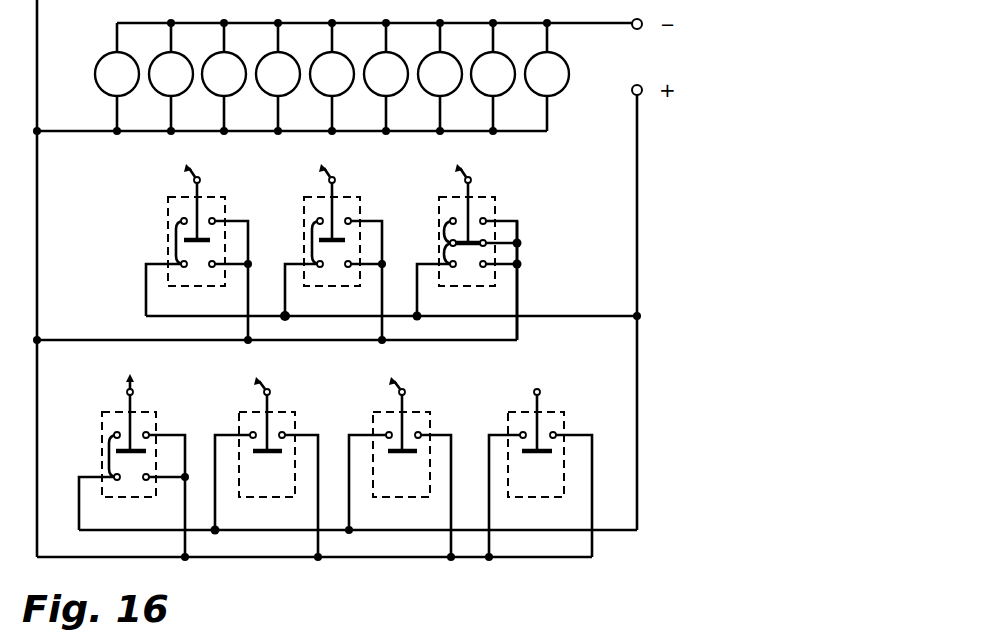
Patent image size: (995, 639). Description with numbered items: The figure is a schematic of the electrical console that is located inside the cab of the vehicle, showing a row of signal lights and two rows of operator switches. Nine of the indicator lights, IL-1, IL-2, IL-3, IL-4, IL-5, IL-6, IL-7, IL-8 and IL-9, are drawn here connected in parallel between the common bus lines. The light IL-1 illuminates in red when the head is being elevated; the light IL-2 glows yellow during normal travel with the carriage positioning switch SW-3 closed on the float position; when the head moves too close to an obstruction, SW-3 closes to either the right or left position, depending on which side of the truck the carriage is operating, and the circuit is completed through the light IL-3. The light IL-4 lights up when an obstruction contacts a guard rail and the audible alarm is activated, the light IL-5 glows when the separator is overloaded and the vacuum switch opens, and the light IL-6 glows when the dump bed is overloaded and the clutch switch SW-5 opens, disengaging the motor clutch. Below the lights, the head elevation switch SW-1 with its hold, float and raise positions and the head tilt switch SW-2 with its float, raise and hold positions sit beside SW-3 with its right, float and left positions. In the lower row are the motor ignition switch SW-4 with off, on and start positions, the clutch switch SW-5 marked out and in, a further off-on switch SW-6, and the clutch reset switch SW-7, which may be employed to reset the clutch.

The indicator light IL-1 is at (117, 79).
The indicator light IL-2 is at (171, 77).
The indicator light IL-3 is at (224, 77).
The indicator light IL-4 is at (278, 77).
The indicator light IL-5 is at (332, 77).
The indicator light IL-6 is at (386, 77).
The indicator light IL-7 is at (440, 77).
The indicator light IL-8 is at (493, 77).
The indicator light IL-9 is at (547, 75).
The head elevation switch SW-1 is at (190, 244).
The head tilt switch SW-2 is at (333, 244).
The carriage positioning switch SW-3 is at (467, 244).
The motor ignition switch SW-4 is at (134, 456).
The clutch switch SW-5 is at (266, 456).
The switch 6 (off/on) SW-6 is at (400, 456).
The clutch reset switch SW-7 is at (540, 456).